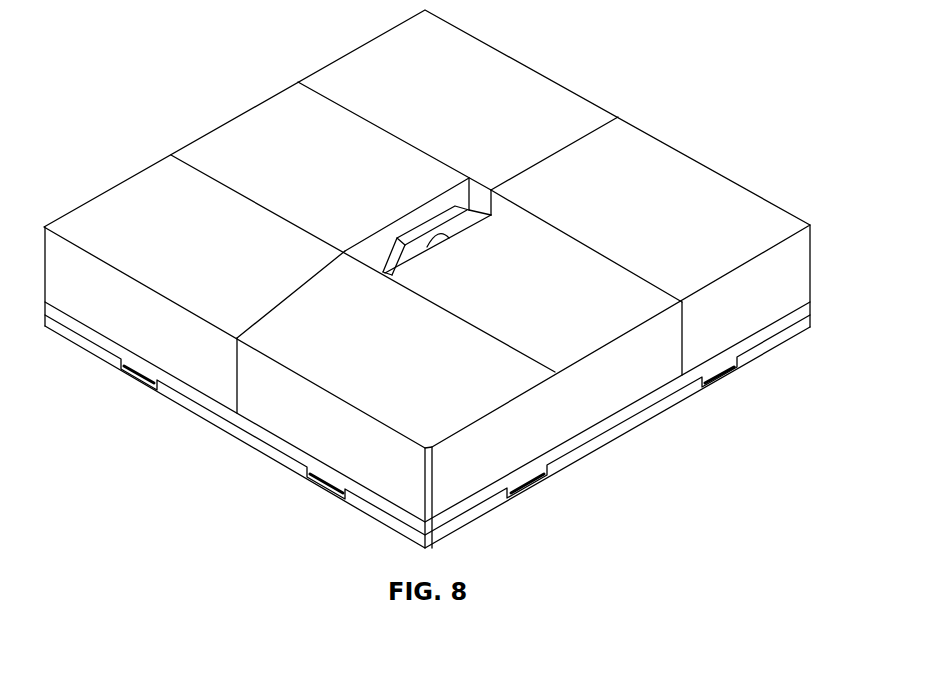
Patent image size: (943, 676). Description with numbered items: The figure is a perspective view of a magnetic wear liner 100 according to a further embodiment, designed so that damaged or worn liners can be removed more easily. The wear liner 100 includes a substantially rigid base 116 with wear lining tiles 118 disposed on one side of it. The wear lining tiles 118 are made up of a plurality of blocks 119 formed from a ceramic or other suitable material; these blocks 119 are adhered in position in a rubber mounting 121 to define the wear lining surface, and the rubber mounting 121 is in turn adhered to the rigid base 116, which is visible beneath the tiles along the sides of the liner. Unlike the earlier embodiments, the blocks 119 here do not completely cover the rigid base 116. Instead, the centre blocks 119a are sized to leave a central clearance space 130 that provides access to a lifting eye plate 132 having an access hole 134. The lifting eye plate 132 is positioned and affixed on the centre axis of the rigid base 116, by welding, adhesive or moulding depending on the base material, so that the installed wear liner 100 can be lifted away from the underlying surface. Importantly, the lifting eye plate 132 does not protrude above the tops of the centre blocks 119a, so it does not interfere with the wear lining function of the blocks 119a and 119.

The magnetic wear liner 100 is at (710, 80).
The rigid base 116 is at (645, 420).
The wear lining tiles 118 is at (147, 197).
The blocks 119 is at (452, 86).
The centre blocks 119a is at (348, 172).
The rubber mounting 121 is at (568, 449).
The central clearance space 130 is at (474, 163).
The lifting eye plate 132 is at (452, 216).
The access hole 134 is at (440, 238).